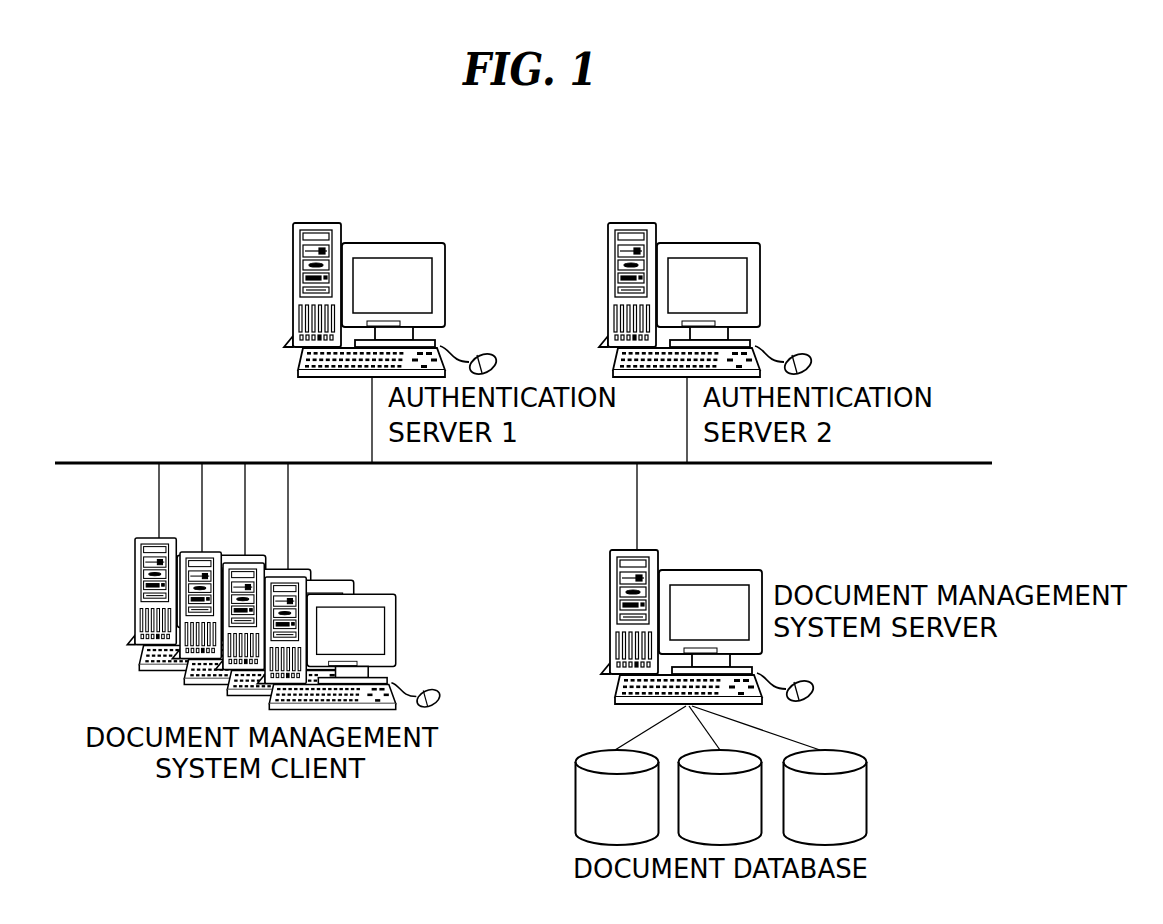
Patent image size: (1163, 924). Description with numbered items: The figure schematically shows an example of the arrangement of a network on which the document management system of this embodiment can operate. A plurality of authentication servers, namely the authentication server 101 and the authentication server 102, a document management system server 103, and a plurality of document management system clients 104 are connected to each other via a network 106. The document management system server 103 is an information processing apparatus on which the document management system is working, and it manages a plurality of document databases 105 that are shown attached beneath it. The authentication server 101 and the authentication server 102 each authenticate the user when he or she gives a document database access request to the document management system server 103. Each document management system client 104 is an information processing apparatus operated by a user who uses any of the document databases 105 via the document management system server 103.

The authentication server (1) 101 is at (313, 223).
The authentication server (2) 102 is at (629, 223).
The document management system server 103 is at (610, 580).
The document management system client 104 is at (135, 572).
The document database 105 is at (575, 800).
The network 106 is at (738, 465).